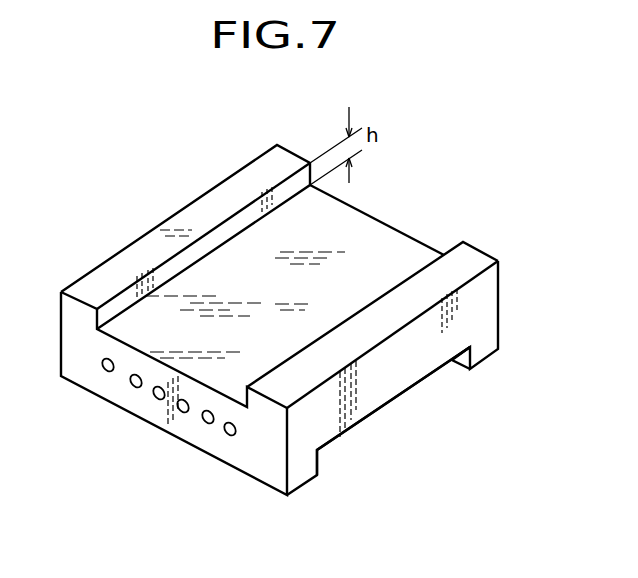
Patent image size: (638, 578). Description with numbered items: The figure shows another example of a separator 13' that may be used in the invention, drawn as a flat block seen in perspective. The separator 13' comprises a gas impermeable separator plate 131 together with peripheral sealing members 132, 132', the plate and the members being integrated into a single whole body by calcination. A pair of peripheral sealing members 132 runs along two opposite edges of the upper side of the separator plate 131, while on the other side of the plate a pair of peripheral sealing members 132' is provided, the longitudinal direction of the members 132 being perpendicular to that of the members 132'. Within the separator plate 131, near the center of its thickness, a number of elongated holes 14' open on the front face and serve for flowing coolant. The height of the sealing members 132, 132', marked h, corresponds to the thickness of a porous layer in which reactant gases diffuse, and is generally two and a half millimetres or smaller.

The separator 13' is at (312, 340).
The separator plate 131 is at (353, 222).
The peripheral sealing member 132 is at (291, 276).
The peripheral sealing member 132' is at (429, 437).
The elongated holes 14' is at (147, 396).